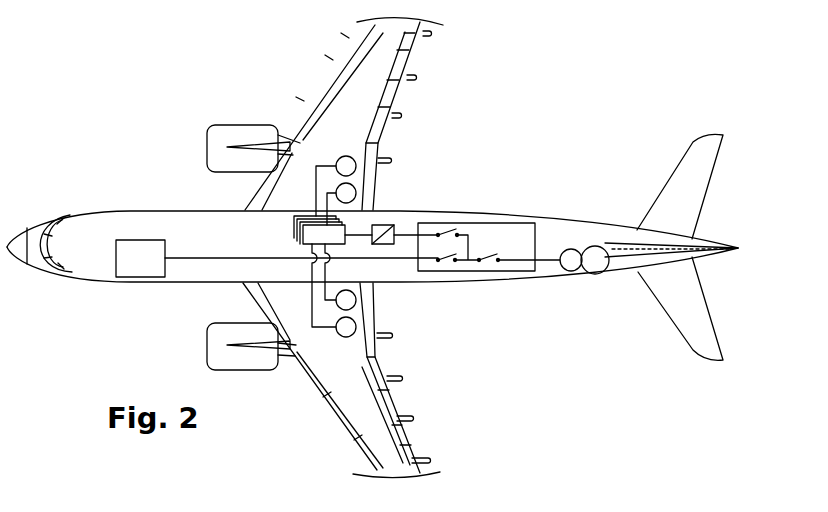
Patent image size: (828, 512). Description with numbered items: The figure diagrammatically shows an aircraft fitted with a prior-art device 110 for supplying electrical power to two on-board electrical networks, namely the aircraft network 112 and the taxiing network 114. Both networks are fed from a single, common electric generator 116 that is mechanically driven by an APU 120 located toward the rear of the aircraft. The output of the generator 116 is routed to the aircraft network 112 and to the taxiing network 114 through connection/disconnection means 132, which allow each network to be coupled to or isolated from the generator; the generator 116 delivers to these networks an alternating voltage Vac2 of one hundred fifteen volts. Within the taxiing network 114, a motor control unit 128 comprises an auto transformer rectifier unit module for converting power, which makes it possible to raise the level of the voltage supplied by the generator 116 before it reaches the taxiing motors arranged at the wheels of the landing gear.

The device for supplying electrical power 110 is at (500, 168).
The aircraft network 112 is at (203, 268).
The taxiing network 114 is at (405, 223).
The electric generator 116 is at (575, 271).
The APU 120 is at (603, 243).
The motor control unit 128 is at (293, 222).
The connection/disconnection means 132 is at (470, 271).